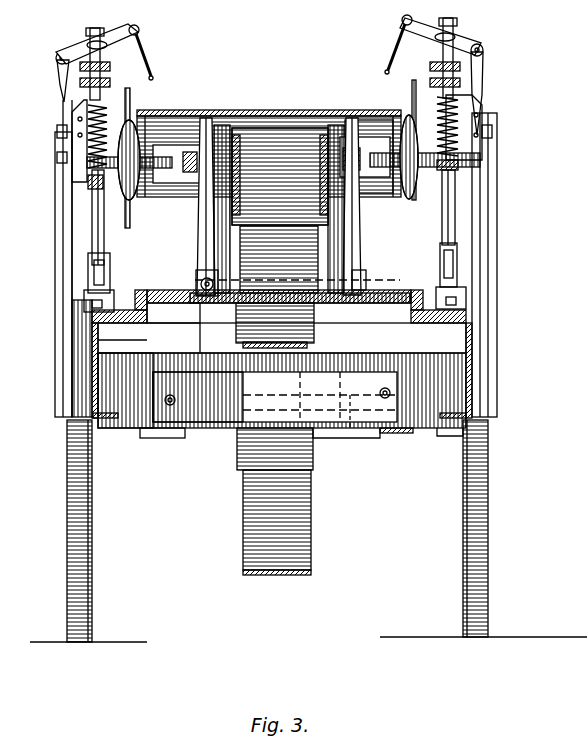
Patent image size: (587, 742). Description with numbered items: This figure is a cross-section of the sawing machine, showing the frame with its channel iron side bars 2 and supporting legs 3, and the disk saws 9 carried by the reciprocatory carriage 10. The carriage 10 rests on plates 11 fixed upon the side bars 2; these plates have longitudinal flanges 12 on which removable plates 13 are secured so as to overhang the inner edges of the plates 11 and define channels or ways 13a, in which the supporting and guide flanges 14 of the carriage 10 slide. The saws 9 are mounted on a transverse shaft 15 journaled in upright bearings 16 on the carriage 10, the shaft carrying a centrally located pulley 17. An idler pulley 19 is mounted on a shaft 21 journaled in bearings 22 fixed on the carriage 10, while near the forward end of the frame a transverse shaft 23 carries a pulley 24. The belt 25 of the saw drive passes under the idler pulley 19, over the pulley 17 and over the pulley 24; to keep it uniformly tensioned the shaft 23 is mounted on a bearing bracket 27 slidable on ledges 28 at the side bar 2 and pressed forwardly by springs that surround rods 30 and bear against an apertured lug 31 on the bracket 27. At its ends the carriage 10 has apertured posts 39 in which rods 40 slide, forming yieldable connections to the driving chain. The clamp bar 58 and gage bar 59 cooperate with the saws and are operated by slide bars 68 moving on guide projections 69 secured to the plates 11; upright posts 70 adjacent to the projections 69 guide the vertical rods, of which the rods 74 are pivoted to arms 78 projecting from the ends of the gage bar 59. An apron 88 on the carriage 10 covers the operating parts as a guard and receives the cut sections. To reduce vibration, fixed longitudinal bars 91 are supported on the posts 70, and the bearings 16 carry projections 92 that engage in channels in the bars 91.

The side bars 2 is at (92, 402).
The legs 3 is at (94, 558).
The disk saws 9 is at (130, 88).
The reciprocatory carriage 10 is at (312, 322).
The plates 11 is at (282, 338).
The longitudinal flanges 12 is at (140, 302).
The plates 13 is at (160, 292).
The channels or ways 13a is at (171, 338).
The supporting and guide flanges 14 is at (188, 310).
The transverse shaft 15 is at (398, 150).
The upright bearings 16 is at (202, 250).
The pulley 17 is at (310, 130).
The idler pulley 19 is at (312, 340).
The shafts 21 is at (262, 283).
The bearings 22 is at (366, 276).
The transverse shaft 23 is at (200, 352).
The pulley 24 is at (315, 470).
The belt 25 is at (345, 356).
The bearing bracket 27 is at (352, 430).
The ledges 28 is at (405, 436).
The rods 30 is at (165, 399).
The apertured lug 31 is at (380, 374).
The apertured posts 39 is at (211, 279).
The rods 40 is at (220, 276).
The clamp bar 58 is at (106, 72).
The gage bar 59 is at (148, 30).
The slide bars 68 is at (100, 282).
The guide projections 69 is at (112, 296).
The upright posts 70 is at (68, 277).
The vertical rods 74 is at (96, 226).
The arms 78 is at (70, 53).
The apron 88 is at (250, 112).
The fixed longitudinal bars 91 is at (72, 172).
The projections 92 is at (150, 160).